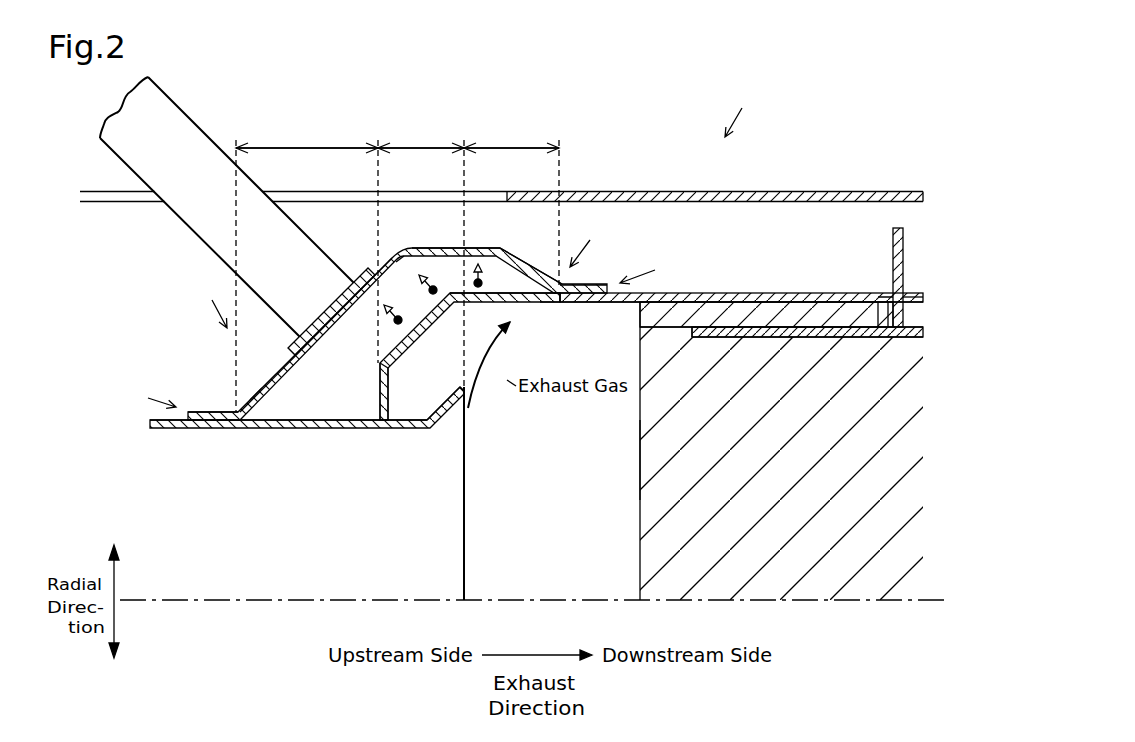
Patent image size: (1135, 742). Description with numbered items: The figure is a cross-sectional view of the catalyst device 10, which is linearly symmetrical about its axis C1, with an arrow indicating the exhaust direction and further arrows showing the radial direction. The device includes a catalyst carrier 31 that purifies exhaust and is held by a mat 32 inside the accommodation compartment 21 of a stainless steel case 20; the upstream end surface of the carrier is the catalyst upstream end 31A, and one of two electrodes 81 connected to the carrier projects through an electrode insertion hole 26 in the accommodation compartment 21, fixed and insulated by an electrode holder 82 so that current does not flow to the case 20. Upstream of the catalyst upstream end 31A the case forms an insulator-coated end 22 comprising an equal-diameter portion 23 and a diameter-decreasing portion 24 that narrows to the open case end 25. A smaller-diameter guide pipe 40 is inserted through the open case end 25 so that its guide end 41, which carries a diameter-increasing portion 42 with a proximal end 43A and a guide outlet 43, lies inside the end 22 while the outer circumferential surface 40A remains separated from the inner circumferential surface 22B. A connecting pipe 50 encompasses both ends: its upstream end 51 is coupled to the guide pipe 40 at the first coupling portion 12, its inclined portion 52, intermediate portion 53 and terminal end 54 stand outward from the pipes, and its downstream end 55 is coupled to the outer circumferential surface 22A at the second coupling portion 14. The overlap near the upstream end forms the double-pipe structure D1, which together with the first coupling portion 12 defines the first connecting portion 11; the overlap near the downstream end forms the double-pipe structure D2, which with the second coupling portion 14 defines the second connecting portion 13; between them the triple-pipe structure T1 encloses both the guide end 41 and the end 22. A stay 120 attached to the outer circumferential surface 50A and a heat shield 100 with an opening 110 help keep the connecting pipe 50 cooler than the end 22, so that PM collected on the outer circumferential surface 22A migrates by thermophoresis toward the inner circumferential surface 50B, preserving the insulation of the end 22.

The catalyst device 10 is at (741, 108).
The first connecting portion 11 is at (209, 301).
The first coupling portion 12 is at (143, 391).
The second connecting portion 13 is at (589, 241).
The second coupling portion 14 is at (653, 267).
The case 20 is at (730, 293).
The accommodation compartment 21 is at (777, 302).
The end 22 is at (383, 338).
The outer circumferential surface 22A is at (497, 292).
The inner circumferential surface 22B is at (545, 302).
The equal-diameter portion 23 is at (578, 302).
The diameter-decreasing portion 24 is at (411, 346).
The open case end 25 is at (380, 372).
The electrode insertion hole 26 is at (888, 295).
The catalyst carrier 31 is at (650, 505).
The catalyst upstream end 31A is at (638, 463).
The mat 32 is at (830, 312).
The guide pipe 40 is at (340, 428).
The outer circumferential surface 40A is at (272, 420).
The guide end 41 is at (413, 428).
The diameter-increasing portion 42 is at (456, 411).
The guide outlet 43 is at (466, 528).
The proximal end 43A is at (455, 418).
The connecting pipe 50 is at (414, 247).
The outer circumferential surface 50A is at (268, 382).
The inner circumferential surface 50B is at (402, 268).
The upstream end 51 is at (203, 412).
The inclined portion 52 is at (282, 368).
The intermediate portion 53 is at (456, 247).
The terminal end 54 is at (545, 274).
The downstream end 55 is at (587, 285).
The electrode 81 is at (893, 236).
The electrode holder 82 is at (910, 295).
The heat shield 100 is at (800, 191).
The opening 110 is at (505, 191).
The stay 120 is at (197, 91).
The element PM is at (434, 287).
The double-pipe structure D1 is at (306, 147).
The triple-pipe structure T1 is at (421, 147).
The double-pipe structure D2 is at (508, 147).
The axis C1 is at (225, 602).